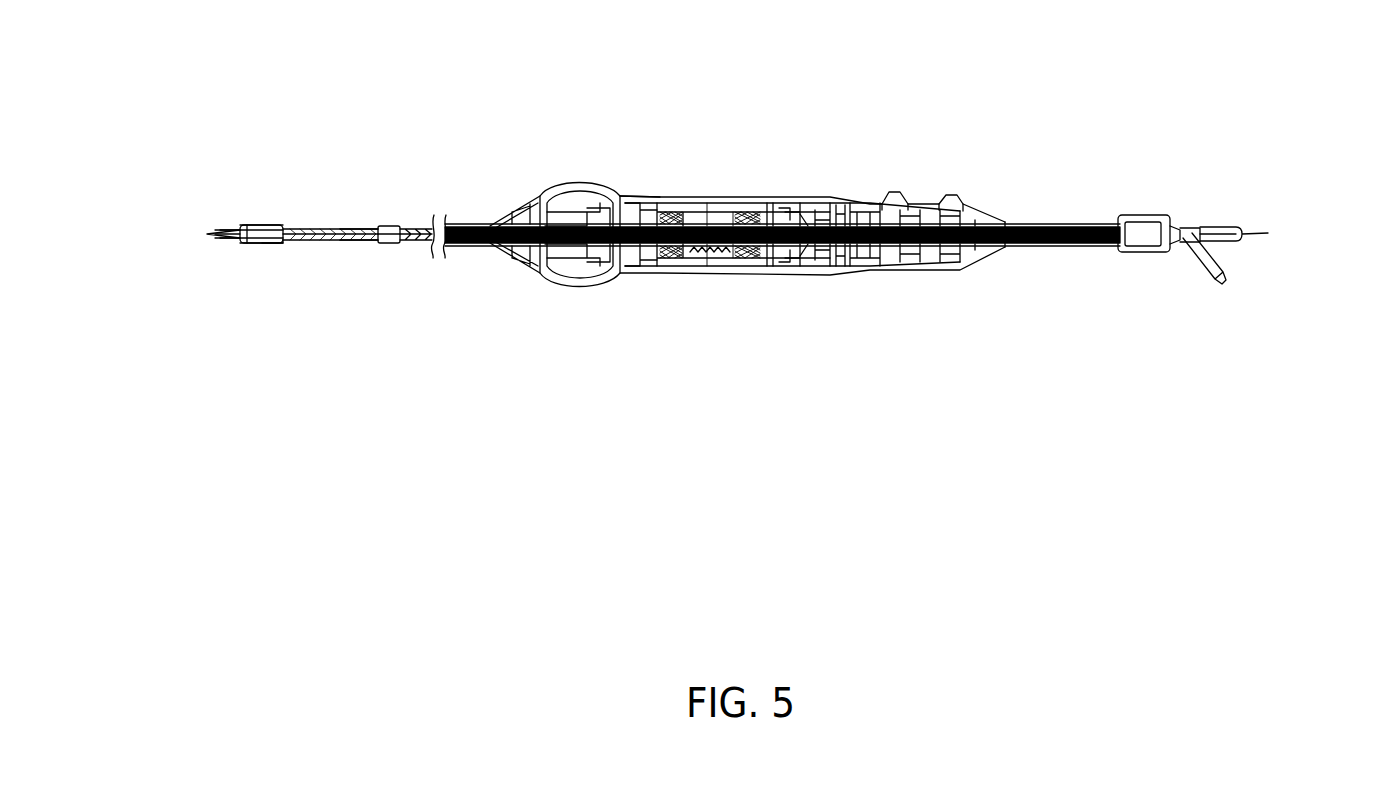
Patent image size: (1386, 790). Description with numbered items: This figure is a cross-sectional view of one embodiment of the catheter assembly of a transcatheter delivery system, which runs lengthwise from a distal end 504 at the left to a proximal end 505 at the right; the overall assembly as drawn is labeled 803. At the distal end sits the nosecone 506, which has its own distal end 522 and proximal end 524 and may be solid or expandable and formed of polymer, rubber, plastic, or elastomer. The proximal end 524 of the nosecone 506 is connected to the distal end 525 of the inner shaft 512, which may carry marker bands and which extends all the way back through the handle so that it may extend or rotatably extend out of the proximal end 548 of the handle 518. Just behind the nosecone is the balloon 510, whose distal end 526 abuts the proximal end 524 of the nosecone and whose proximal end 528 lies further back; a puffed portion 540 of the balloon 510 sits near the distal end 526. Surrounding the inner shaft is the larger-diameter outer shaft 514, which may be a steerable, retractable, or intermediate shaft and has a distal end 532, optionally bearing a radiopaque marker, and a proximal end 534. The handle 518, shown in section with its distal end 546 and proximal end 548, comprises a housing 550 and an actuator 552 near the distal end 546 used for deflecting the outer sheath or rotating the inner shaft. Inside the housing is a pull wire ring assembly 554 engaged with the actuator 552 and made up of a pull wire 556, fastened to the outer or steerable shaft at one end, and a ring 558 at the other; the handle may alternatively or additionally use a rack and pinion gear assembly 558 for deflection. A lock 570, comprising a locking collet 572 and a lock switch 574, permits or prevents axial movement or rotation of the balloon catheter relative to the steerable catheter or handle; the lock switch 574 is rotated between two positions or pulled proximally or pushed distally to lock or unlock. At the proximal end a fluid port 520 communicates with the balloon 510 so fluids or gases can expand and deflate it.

The distal end 504 is at (206, 233).
The proximal end 505 is at (1262, 235).
The nosecone 506 is at (222, 223).
The balloon 510 is at (297, 220).
The inner shaft 512 is at (360, 227).
The outer shaft 514 is at (466, 216).
The handle 518 is at (597, 179).
The fluid port 520 is at (1226, 284).
The distal end 522 is at (205, 239).
The proximal end 524 is at (236, 245).
The distal end 525 is at (240, 226).
The distal end 526 is at (243, 244).
The proximal end 528 is at (378, 244).
The distal end 532 is at (401, 227).
The proximal end 534 is at (1100, 250).
The puffed portion 540 is at (268, 243).
The distal end 546 is at (486, 256).
The proximal end 548 is at (1005, 262).
The housing 550 is at (707, 208).
The actuator 552 is at (539, 283).
The pull wire ring assembly 554 is at (916, 188).
The pull wire 556 is at (849, 264).
The ring 558 is at (736, 204).
The lock 570 is at (801, 204).
The locking collet 572 is at (831, 270).
The lock switch 574 is at (790, 270).
The delivery device 803 is at (690, 107).